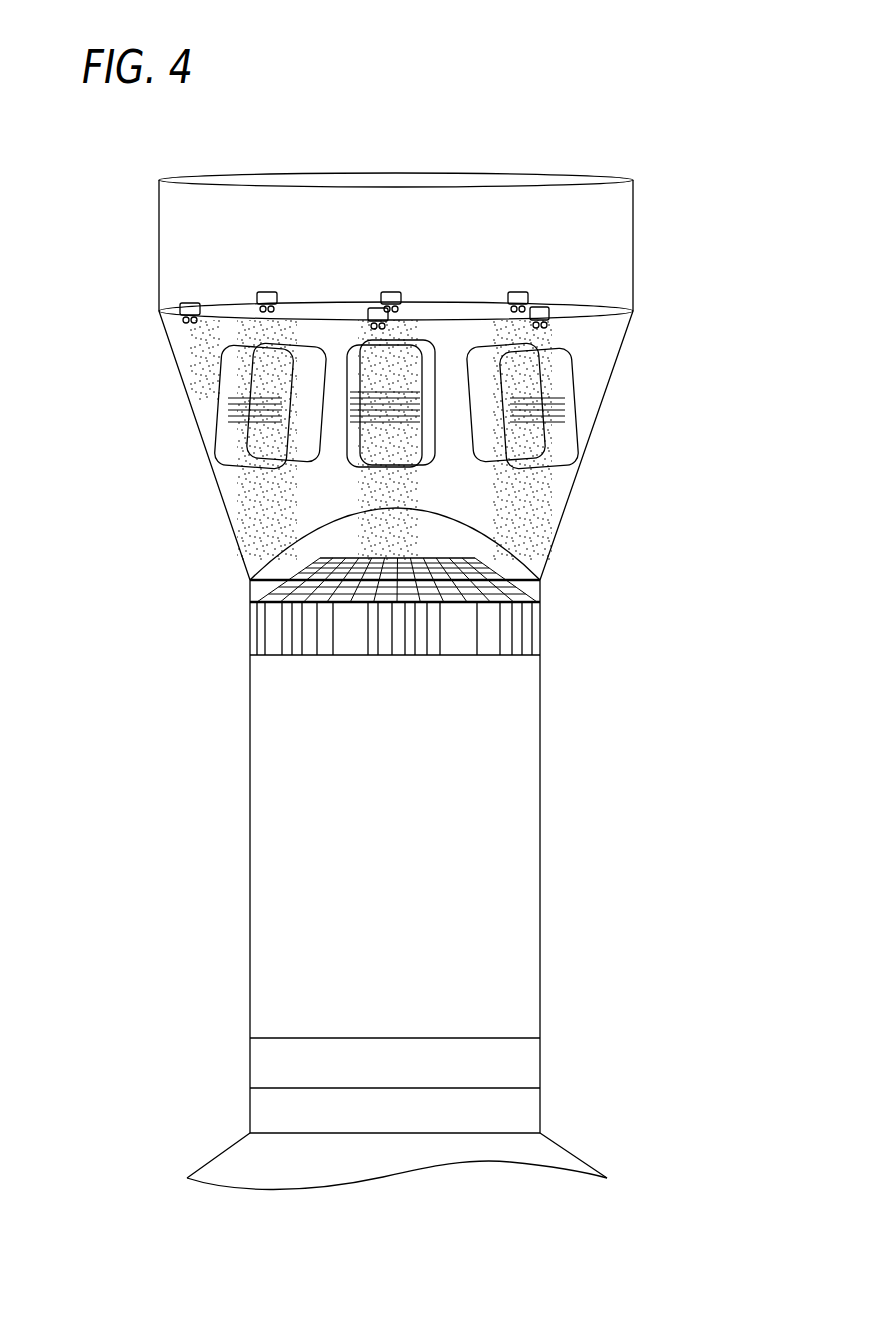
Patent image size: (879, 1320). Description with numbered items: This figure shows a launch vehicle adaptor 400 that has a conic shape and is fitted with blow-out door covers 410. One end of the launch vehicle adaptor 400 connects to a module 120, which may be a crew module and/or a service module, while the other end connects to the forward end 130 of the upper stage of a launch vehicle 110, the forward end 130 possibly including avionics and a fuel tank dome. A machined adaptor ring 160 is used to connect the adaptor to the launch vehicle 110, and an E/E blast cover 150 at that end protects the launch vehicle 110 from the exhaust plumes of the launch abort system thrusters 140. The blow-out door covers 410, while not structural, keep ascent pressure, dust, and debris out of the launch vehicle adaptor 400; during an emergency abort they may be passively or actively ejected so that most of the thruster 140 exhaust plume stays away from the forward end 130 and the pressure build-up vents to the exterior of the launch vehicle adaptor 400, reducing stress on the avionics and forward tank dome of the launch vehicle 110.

The launch vehicle 110 is at (716, 602).
The module 120 is at (716, 179).
The forward end 130 is at (348, 565).
The launch abort system thrusters 140 is at (380, 323).
The E/E blast cover 150 is at (290, 545).
The machined adaptor ring 160 is at (243, 593).
The launch vehicle adaptor 400 is at (716, 602).
The blow-out door covers 410 is at (357, 415).